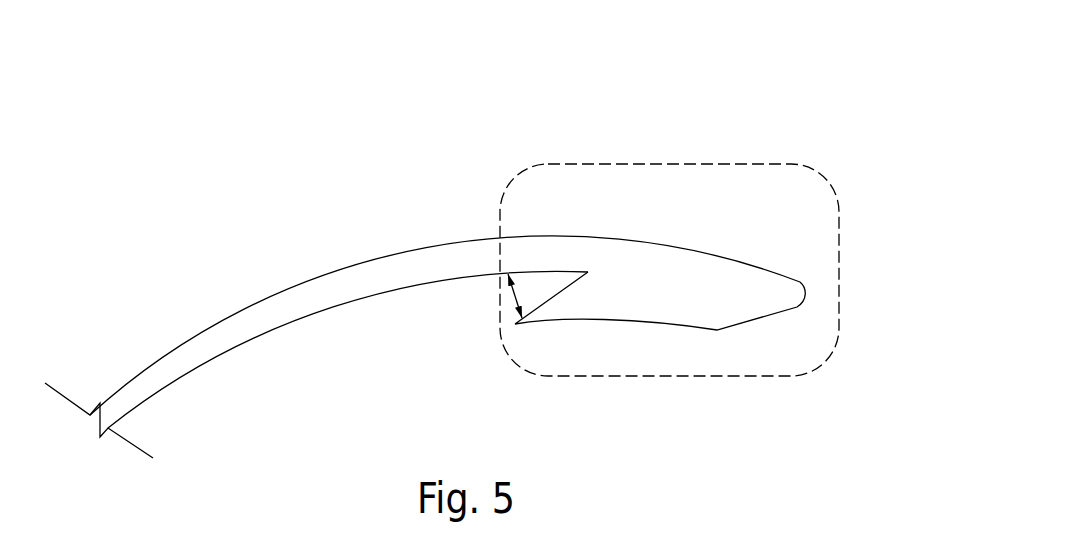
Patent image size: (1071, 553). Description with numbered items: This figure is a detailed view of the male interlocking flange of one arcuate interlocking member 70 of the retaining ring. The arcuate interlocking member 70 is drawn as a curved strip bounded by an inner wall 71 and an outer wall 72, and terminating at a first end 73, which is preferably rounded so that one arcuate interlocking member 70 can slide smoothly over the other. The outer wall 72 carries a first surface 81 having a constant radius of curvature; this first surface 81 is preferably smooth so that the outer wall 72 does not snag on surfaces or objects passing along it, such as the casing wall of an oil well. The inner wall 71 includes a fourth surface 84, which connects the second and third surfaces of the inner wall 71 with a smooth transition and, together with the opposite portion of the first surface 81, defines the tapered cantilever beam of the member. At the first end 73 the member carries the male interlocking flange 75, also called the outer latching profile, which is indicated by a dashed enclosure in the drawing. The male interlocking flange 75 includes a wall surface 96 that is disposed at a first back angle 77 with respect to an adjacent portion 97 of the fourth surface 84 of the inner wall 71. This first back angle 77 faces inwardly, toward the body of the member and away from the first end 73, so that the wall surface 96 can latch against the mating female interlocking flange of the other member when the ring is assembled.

The arcuate interlocking member 70 is at (692, 95).
The inner wall 71 is at (253, 340).
The outer wall 72 is at (287, 287).
The first end 73 is at (797, 307).
The male interlocking flange 75 is at (823, 178).
The first back angle 77 is at (513, 298).
The first surface 81 is at (334, 271).
The fourth surface 84 is at (343, 307).
The wall surface 96 is at (563, 290).
The adjacent portion 97 is at (553, 270).